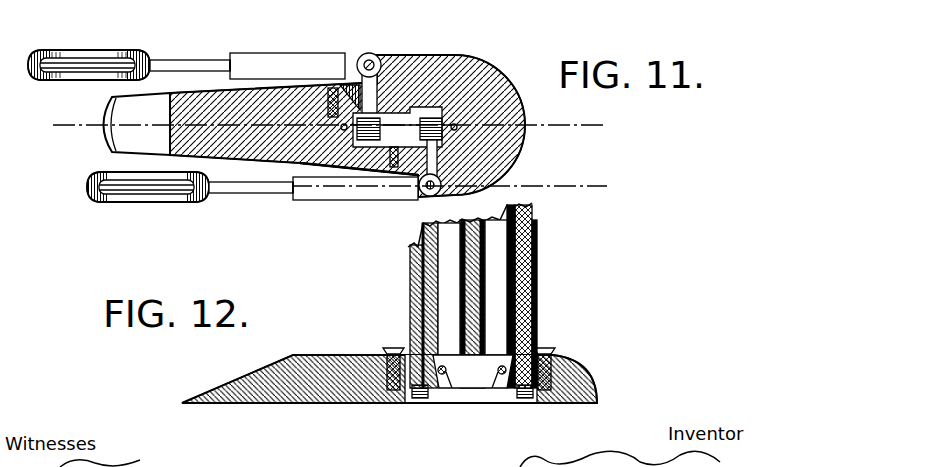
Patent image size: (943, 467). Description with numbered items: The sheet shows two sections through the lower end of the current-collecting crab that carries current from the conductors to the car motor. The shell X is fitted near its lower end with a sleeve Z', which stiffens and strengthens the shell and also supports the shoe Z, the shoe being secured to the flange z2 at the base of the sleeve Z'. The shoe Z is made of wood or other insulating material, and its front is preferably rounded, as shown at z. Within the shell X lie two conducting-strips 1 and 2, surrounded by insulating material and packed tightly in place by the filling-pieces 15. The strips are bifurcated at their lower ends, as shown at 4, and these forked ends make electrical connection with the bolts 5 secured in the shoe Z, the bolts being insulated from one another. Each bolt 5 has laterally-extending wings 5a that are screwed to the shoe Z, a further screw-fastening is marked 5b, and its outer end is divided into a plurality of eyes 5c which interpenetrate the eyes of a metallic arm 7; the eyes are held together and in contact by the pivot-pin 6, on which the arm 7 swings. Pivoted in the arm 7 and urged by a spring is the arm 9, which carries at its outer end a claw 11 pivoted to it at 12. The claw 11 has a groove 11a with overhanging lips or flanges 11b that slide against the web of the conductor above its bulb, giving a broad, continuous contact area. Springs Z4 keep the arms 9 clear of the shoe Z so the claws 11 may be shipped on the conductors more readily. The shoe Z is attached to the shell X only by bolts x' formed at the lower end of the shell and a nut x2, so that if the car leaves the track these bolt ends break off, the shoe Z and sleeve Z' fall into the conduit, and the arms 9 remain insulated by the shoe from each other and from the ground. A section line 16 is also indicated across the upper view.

In FIG. 11, the shoe Z is at (315, 117).
In FIG. 12, the shoe Z is at (389, 400).
In FIG. 11, the metallic arm 7 is at (293, 60).
In FIG. 11, the pivot-pin 6 is at (369, 53).
In FIG. 11, the bifurcated ends of the conducting-strips 4 is at (428, 110).
In FIG. 12, the bifurcated ends of the conducting-strips 4 is at (458, 390).
In FIG. 11, the bolt 5 is at (352, 83).
In FIG. 12, the bolt 5 is at (498, 373).
In FIG. 11, the laterally-extending wing 5a is at (331, 86).
In FIG. 11, the screw 5b is at (392, 170).
In FIG. 11, the eye 5c is at (378, 62).
In FIG. 11, the pivot of the claw 12 is at (325, 126).
In FIG. 11, the center line of lower rod 16 is at (461, 190).
In FIG. 11, the bolt x' is at (533, 106).
In FIG. 12, the bolt x' is at (472, 409).
In FIG. 11, the claw 11 is at (92, 56).
In FIG. 11, the groove 11a is at (123, 62).
In FIG. 11, the overhanging lips or flanges 11b is at (108, 226).
In FIG. 11, the arm 9 is at (250, 210).
In FIG. 11, the spring Z4 is at (300, 169).
In FIG. 12, the flange z2 is at (575, 339).
In FIG. 12, the rounded front of the shoe z is at (604, 368).
In FIG. 12, the sleeve Z' is at (488, 305).
In FIG. 12, the shell X is at (532, 212).
In FIG. 12, the filling-piece 15 is at (537, 241).
In FIG. 12, the conducting-strip 2 is at (449, 289).
In FIG. 12, the conducting-strip 1 is at (496, 287).
In FIG. 12, the nut x2 is at (552, 417).